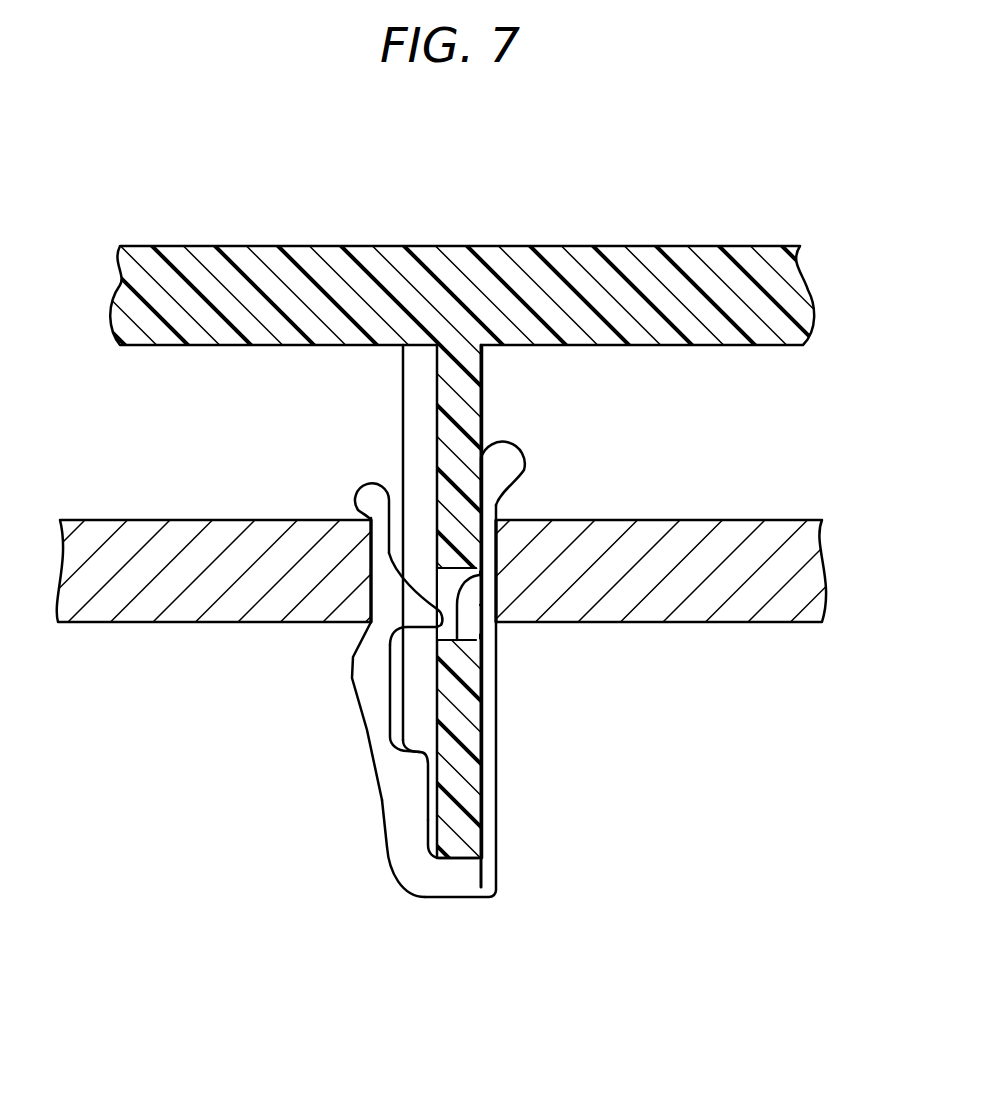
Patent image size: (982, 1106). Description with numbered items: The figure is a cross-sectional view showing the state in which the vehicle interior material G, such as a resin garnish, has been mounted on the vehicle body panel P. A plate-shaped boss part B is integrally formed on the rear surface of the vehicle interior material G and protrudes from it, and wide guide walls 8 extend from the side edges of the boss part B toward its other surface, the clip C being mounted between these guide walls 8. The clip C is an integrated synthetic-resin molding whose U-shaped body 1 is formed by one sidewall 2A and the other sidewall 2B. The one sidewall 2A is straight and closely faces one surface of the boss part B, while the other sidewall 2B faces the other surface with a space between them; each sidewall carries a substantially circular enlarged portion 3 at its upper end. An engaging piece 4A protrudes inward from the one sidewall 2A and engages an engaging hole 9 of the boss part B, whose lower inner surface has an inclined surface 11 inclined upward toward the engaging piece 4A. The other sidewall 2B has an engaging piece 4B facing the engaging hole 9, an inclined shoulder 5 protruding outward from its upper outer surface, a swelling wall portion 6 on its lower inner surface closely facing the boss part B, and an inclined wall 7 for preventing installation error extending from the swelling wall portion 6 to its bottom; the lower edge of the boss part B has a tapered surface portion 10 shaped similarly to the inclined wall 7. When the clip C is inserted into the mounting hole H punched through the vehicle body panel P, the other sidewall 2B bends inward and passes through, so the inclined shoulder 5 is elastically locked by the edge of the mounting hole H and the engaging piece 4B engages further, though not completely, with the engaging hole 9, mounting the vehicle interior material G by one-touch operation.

The U-shaped body 1 is at (553, 728).
The one sidewall 2A is at (485, 770).
The other sidewall 2B is at (370, 688).
The enlarged portion 3 is at (368, 497).
The engaging piece 4A is at (463, 617).
The engaging piece 4B is at (435, 614).
The inclined shoulder 5 is at (355, 652).
The swelling wall portion 6 is at (413, 763).
The inclined wall 7 is at (427, 848).
The guide wall 8 is at (415, 368).
The engaging hole 9 is at (458, 583).
The tapered surface portion 10 is at (428, 820).
The inclined surface 11 is at (443, 643).
The vehicle interior material G is at (696, 262).
The vehicle body panel P is at (772, 540).
The mounting hole H is at (498, 593).
The boss part B is at (455, 792).
The clip C is at (308, 740).